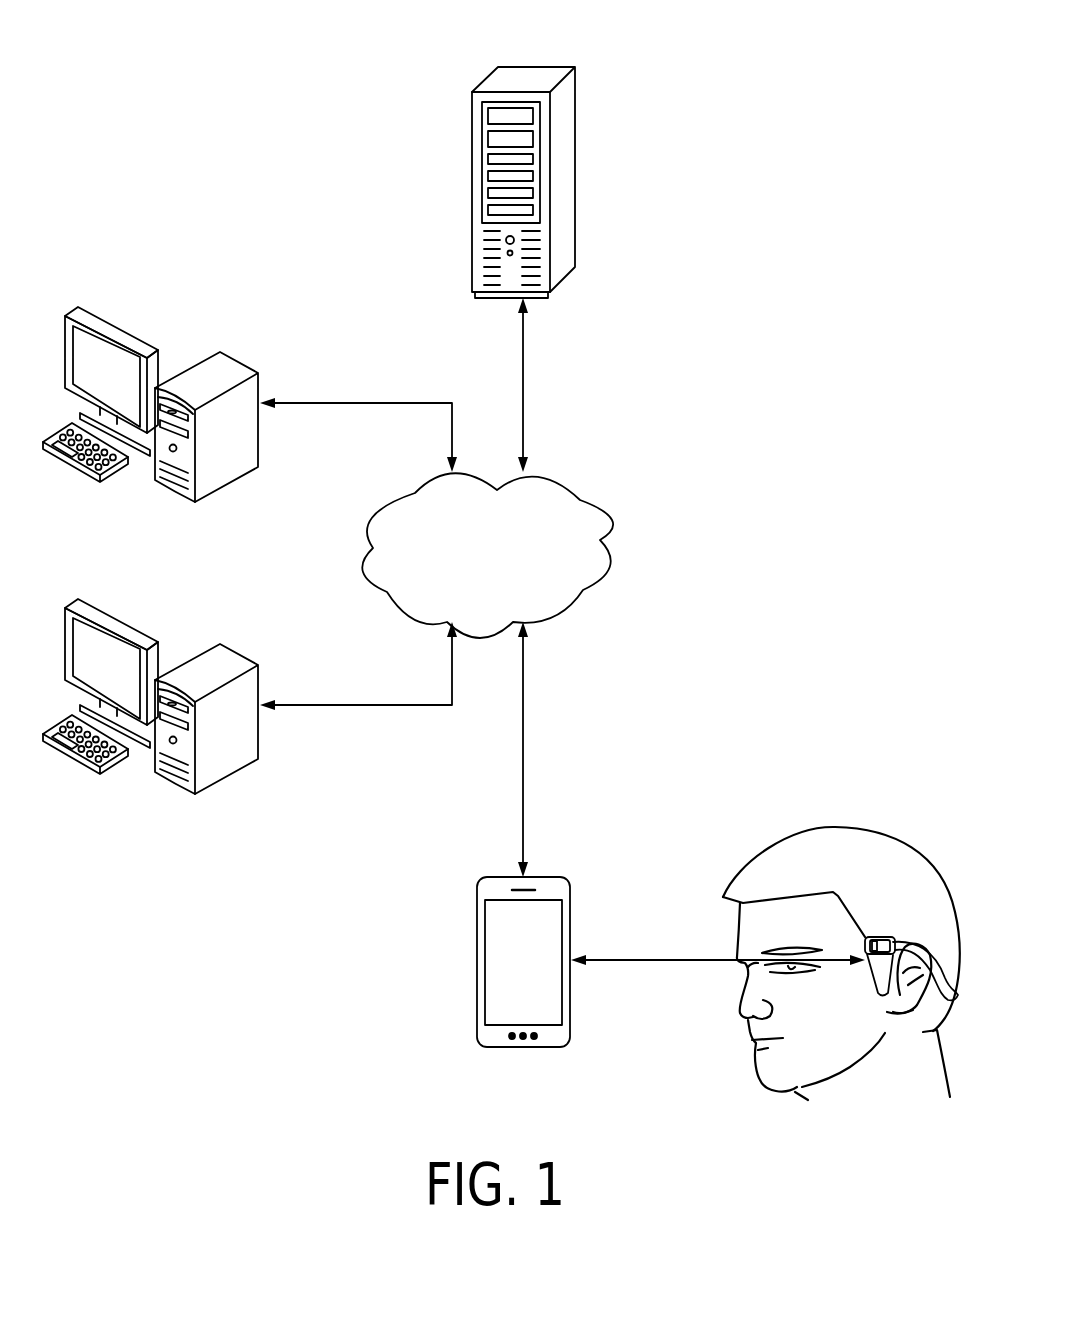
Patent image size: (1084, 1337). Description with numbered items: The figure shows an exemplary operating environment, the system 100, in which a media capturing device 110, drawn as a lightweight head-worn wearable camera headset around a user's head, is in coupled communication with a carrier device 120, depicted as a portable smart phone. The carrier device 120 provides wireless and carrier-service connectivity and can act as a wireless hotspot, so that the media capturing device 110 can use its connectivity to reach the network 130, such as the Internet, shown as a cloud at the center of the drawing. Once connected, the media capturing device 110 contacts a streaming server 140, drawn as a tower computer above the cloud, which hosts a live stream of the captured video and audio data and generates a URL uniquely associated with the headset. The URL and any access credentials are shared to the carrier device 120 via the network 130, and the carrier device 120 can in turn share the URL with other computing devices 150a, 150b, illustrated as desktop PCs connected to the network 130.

The system 100 is at (842, 96).
The media capturing device 110 is at (877, 935).
The carrier device 120 is at (477, 929).
The network 130 is at (509, 569).
The streaming server 140 is at (530, 65).
The computing device 150a is at (233, 356).
The computing device 150b is at (233, 648).